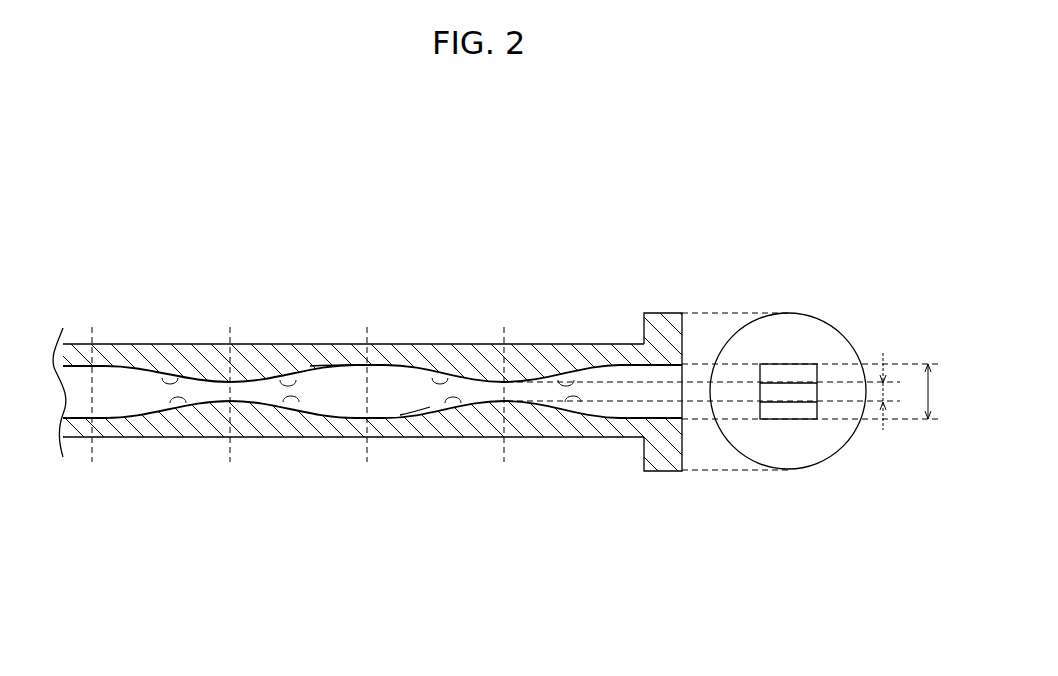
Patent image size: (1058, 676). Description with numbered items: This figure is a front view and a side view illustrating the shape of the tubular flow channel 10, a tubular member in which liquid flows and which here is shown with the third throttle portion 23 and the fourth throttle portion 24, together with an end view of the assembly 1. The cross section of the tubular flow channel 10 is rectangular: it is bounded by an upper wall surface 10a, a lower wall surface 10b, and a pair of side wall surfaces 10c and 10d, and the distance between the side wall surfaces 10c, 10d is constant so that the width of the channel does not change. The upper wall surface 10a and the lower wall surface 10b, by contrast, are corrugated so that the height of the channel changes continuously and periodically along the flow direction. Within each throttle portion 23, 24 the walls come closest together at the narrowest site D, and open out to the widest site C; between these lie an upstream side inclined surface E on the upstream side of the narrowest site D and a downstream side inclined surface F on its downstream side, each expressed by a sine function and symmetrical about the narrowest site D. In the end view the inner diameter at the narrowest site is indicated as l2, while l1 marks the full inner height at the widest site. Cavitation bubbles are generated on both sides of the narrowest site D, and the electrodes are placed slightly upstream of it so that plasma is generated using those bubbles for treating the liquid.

The heat exchange tube 1 is at (325, 256).
The tubular flow channel 10 is at (664, 313).
The upper wall surface 10a is at (350, 367).
The lower wall surface 10b is at (415, 412).
The side wall surface 10c is at (762, 393).
The side wall surface 10d is at (813, 393).
The third throttle portion 23 is at (222, 313).
The fourth throttle portion 24 is at (500, 315).
The widest site C is at (93, 388).
The narrowest site D is at (230, 392).
The upstream side inclined surface E is at (170, 378).
The downstream side inclined surface F is at (287, 380).
The inner diameter l1 is at (936, 391).
The inner diameter of the narrowest site l2 is at (893, 391).